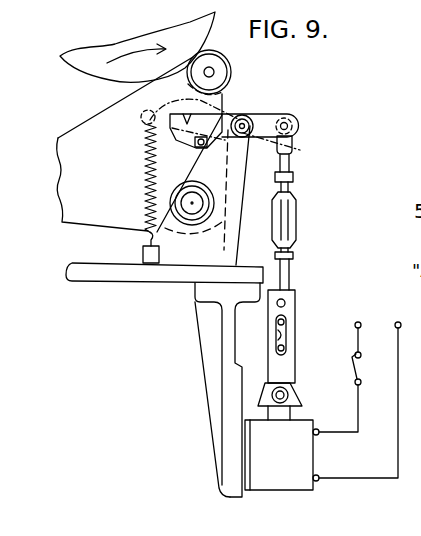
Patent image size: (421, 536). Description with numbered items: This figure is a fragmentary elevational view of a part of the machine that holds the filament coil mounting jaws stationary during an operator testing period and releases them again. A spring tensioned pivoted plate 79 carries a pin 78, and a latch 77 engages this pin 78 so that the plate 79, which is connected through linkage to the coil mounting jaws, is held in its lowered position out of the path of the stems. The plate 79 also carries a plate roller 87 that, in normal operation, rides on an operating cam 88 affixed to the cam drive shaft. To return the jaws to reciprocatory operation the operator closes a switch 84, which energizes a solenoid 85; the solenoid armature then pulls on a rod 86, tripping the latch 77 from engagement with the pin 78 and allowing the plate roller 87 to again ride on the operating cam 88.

The latch 77 is at (263, 114).
The pin 78 is at (197, 146).
The spring tensioned pivoted plate 79 is at (58, 137).
The switch 84 is at (350, 367).
The solenoid 85 is at (310, 458).
The rod 86 is at (292, 270).
The plate roller 87 is at (236, 76).
The operating cam 88 is at (72, 68).